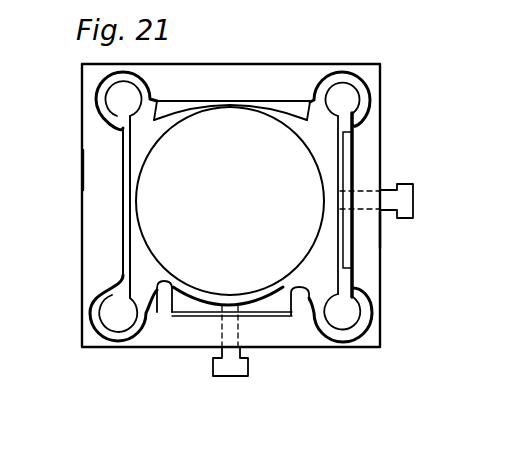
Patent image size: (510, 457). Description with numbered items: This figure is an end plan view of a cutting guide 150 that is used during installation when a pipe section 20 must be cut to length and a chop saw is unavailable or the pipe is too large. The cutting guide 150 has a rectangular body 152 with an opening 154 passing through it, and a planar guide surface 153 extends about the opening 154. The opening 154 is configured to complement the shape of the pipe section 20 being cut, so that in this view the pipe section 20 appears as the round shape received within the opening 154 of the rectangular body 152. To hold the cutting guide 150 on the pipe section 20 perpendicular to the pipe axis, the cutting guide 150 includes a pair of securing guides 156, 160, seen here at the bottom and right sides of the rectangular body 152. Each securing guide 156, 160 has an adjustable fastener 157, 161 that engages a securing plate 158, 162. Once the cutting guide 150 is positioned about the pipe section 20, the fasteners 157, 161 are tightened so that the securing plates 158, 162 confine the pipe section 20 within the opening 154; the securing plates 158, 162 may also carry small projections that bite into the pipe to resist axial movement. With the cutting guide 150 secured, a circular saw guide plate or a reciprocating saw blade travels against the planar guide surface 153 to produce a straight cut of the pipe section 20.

The cutting guide 150 is at (285, 58).
The rectangular body 152 is at (80, 142).
The planar guide surface 153 is at (88, 170).
The pipe section 20 is at (133, 255).
The securing plate 162 is at (348, 165).
The adjustable fastener 161 is at (413, 192).
The securing guide 160 is at (386, 233).
The opening 154 is at (158, 312).
The securing guide 156 is at (267, 343).
The securing plate 158 is at (292, 310).
The adjustable fastener 157 is at (233, 378).